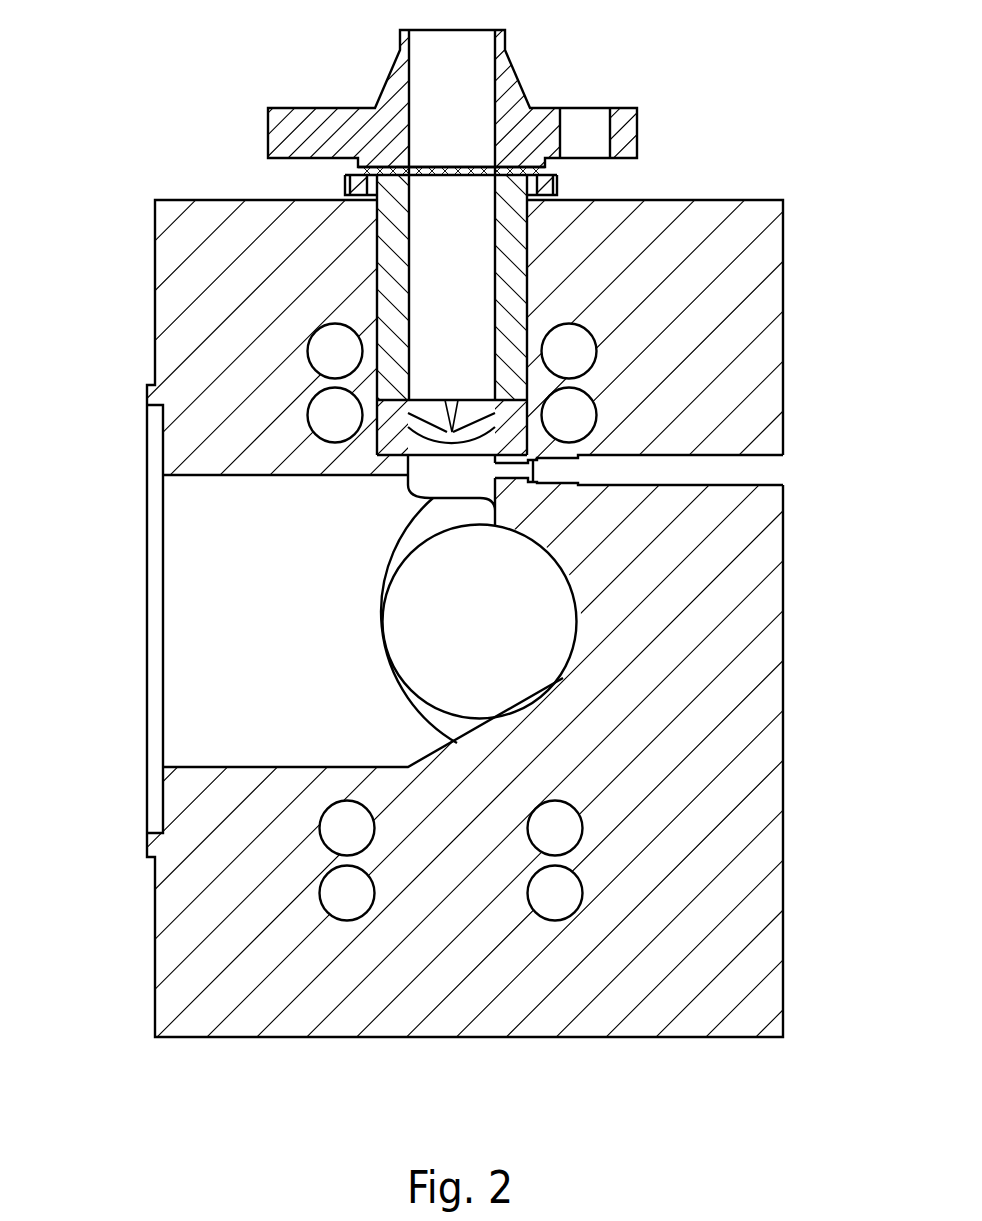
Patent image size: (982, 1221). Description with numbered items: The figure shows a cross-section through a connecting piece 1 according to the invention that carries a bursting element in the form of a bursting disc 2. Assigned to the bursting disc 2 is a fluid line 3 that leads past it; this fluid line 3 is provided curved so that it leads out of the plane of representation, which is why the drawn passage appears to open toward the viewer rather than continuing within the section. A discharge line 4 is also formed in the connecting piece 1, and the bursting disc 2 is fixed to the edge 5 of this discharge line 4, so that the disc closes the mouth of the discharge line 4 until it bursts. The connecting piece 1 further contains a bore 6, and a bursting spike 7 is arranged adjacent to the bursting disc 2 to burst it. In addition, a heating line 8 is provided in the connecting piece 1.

The connecting piece 1 is at (531, 210).
The bursting disc 2 is at (418, 441).
The fluid line 3 is at (243, 637).
The discharge line 4 is at (437, 393).
The edge 5 is at (408, 413).
The bore 6 is at (633, 467).
The bursting spike 7 is at (457, 410).
The heating line 8 is at (570, 351).